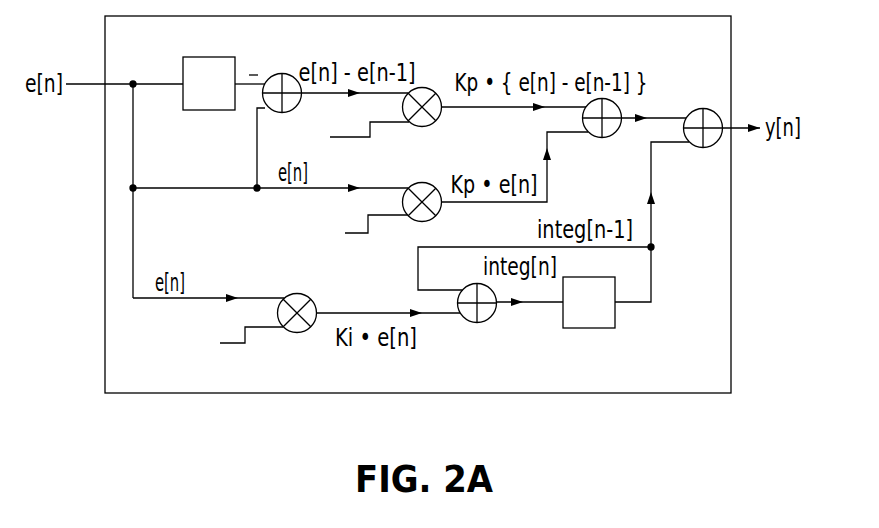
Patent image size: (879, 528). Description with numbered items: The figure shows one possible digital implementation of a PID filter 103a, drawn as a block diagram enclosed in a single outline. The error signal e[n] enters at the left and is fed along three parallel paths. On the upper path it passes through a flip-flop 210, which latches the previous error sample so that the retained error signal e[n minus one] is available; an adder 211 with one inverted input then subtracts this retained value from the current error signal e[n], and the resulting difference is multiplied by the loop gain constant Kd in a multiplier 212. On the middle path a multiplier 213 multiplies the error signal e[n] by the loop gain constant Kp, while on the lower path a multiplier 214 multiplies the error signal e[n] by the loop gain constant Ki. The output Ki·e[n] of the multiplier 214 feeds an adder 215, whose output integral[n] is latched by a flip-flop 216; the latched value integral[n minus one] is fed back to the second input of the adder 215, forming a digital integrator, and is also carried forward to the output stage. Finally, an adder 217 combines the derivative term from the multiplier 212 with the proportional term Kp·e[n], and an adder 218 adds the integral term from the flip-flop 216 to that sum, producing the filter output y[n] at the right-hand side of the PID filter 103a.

The PID filter 103a is at (160, 394).
The flip-flop 210 is at (205, 112).
The adder 211 is at (277, 70).
The multiplier 212 is at (423, 87).
The multiplier 213 is at (428, 184).
The multiplier 214 is at (290, 294).
The adder 215 is at (470, 324).
The flip-flop 216 is at (585, 330).
The adder 217 is at (593, 137).
The adder 218 is at (693, 147).